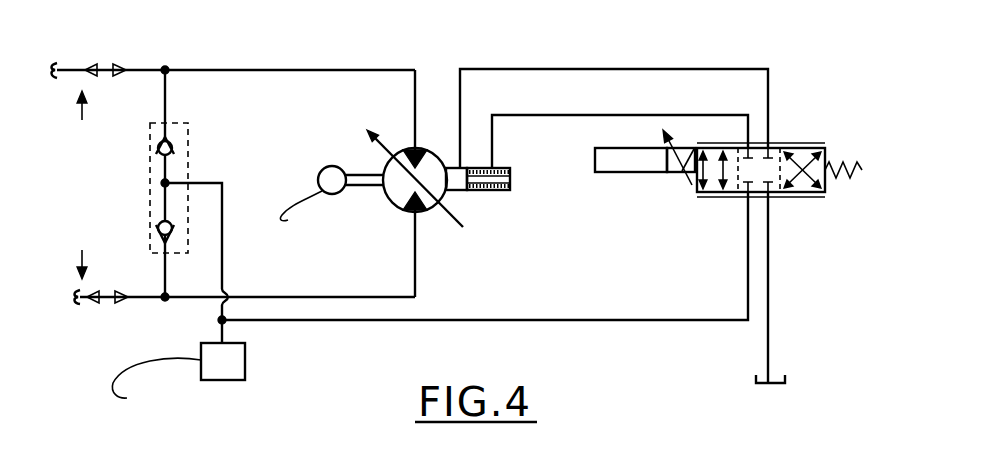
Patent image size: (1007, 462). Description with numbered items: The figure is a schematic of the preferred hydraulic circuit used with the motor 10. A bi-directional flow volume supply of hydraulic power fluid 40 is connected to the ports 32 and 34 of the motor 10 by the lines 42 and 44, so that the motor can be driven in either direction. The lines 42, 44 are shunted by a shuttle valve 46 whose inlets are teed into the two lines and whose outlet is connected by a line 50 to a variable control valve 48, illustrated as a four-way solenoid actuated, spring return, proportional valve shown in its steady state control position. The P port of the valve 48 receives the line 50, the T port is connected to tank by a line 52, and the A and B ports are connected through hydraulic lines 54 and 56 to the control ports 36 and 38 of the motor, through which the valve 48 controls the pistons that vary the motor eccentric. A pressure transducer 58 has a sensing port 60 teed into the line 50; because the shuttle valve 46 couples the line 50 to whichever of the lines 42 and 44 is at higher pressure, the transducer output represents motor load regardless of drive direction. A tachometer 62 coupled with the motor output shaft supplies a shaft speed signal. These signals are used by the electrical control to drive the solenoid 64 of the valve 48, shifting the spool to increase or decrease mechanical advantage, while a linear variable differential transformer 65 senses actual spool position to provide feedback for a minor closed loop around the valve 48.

The motor 10 is at (393, 210).
The port 32 is at (416, 146).
The port 34 is at (418, 208).
The control port 36 is at (510, 159).
The control port 38 is at (458, 167).
The flow volume supply of hydraulic power fluid 40 is at (96, 185).
The line 42 is at (252, 70).
The line 44 is at (196, 300).
The shuttle valve 46 is at (188, 160).
The variable control valve 48 is at (827, 195).
The line 50 is at (657, 320).
The line 52 is at (771, 338).
The hydraulic line 54 is at (522, 116).
The hydraulic line 56 is at (565, 70).
The pressure transducer 58 is at (245, 368).
The sensing port 60 is at (226, 330).
The tachometer 62 is at (318, 180).
The solenoid 64 is at (676, 174).
The linear variable differential transformer 65 is at (596, 164).